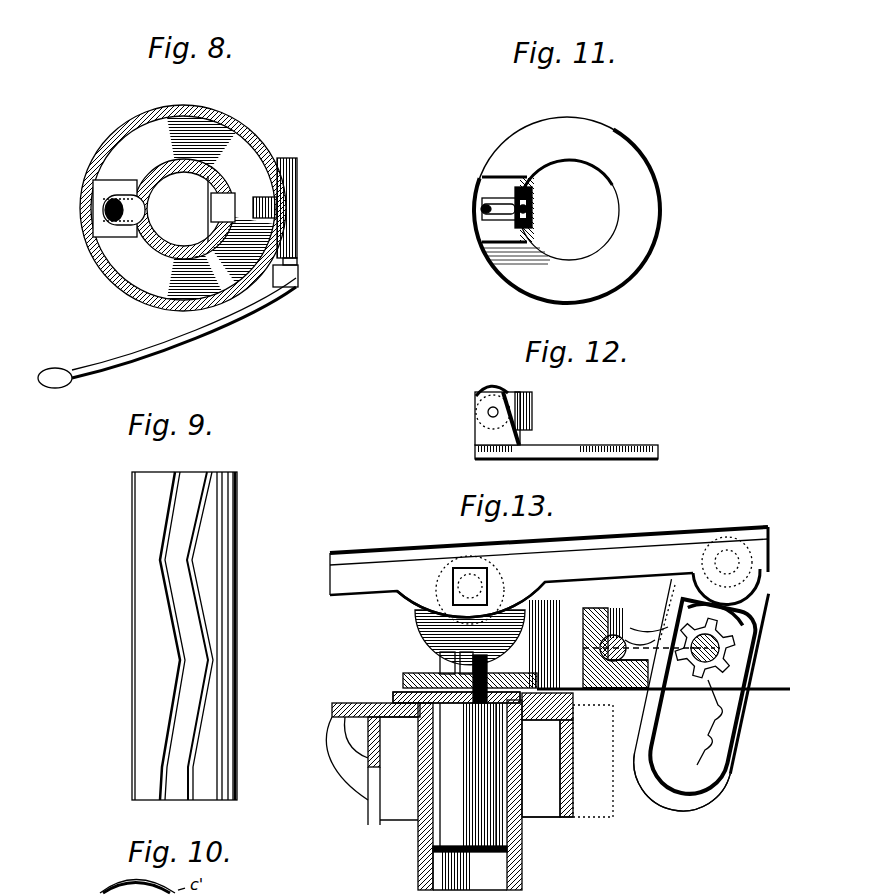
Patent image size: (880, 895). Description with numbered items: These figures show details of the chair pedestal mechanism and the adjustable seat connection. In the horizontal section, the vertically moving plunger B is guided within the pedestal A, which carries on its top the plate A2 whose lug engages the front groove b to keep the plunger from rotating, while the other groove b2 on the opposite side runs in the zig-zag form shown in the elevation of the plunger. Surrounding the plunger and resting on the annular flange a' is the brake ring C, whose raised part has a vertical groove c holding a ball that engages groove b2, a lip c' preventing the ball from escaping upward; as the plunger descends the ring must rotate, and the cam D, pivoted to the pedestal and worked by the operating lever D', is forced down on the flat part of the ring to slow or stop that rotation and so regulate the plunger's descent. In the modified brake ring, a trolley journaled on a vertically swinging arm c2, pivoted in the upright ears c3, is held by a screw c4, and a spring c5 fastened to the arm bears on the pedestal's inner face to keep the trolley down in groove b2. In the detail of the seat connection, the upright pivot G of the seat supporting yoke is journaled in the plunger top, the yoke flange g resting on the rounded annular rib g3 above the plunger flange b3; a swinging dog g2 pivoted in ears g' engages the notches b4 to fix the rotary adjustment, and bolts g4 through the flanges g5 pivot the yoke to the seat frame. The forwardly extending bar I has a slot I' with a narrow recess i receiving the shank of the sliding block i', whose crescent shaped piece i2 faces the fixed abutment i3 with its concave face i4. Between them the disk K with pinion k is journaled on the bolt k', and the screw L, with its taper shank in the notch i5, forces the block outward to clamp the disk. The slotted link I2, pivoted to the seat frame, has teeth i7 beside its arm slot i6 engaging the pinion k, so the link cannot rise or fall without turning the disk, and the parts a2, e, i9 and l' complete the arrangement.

In FIG. 8, the plunger B is at (217, 160).
In FIG. 9, the plunger B is at (133, 618).
In FIG. 13, the plunger B is at (531, 870).
In FIG. 8, the longitudinal vertical groove b is at (232, 195).
In FIG. 8, the zig-zag groove b2 is at (148, 210).
In FIG. 9, the zig-zag groove b2 is at (200, 637).
In FIG. 13, the flange b3 is at (577, 705).
In FIG. 13, the notches b4 is at (372, 693).
In FIG. 8, the vertical groove c is at (89, 215).
In FIG. 8, the lip c' is at (96, 230).
In FIG. 11, the vertically swinging arm c2 is at (478, 212).
In FIG. 12, the vertically swinging arm c2 is at (508, 397).
In FIG. 11, the upright ears c3 is at (483, 188).
In FIG. 12, the upright ears c3 is at (475, 403).
In FIG. 11, the screw c4 is at (526, 212).
In FIG. 11, the spring c5 is at (478, 207).
In FIG. 12, the spring c5 is at (485, 388).
In FIG. 8, the brake ring C is at (208, 293).
In FIG. 11, the brake ring C is at (628, 277).
In FIG. 12, the brake ring C is at (602, 463).
In FIG. 8, the cam D is at (296, 222).
In FIG. 8, the operating lever D' is at (167, 333).
In FIG. 13, the annular flange or ledge a' is at (451, 637).
In FIG. 13, the arm bar a2 is at (614, 548).
In FIG. 13, the flange g is at (586, 677).
In FIG. 13, the ears g' is at (393, 771).
In FIG. 13, the swinging dog g2 is at (415, 767).
In FIG. 13, the rounded annular rib g3 is at (548, 768).
In FIG. 13, the bolts g4 is at (455, 575).
In FIG. 13, the flanges g5 is at (418, 590).
In FIG. 13, the upright pivot G is at (448, 813).
In FIG. 13, the pedestal A is at (557, 822).
In FIG. 13, the plate A2 is at (333, 703).
In FIG. 13, the loop e is at (350, 740).
In FIG. 13, the forwardly extending bar I is at (614, 638).
In FIG. 13, the narrow recess i is at (641, 624).
In FIG. 13, the longitudinal slot I' is at (695, 691).
In FIG. 13, the slotted link I2 is at (702, 798).
In FIG. 13, the sliding block i' is at (615, 704).
In FIG. 13, the crescent shaped piece i2 is at (662, 625).
In FIG. 13, the fixed abutment i3 is at (765, 683).
In FIG. 13, the concave face i4 is at (743, 722).
In FIG. 13, the notch i5 is at (625, 642).
In FIG. 13, the arm slot i6 is at (657, 772).
In FIG. 13, the teeth i7 is at (699, 762).
In FIG. 13, the bar end i9 is at (750, 570).
In FIG. 13, the pinion k is at (725, 741).
In FIG. 13, the bolt k' is at (731, 597).
In FIG. 13, the disk K is at (702, 688).
In FIG. 13, the screw L is at (583, 668).
In FIG. 13, the link l' is at (614, 646).